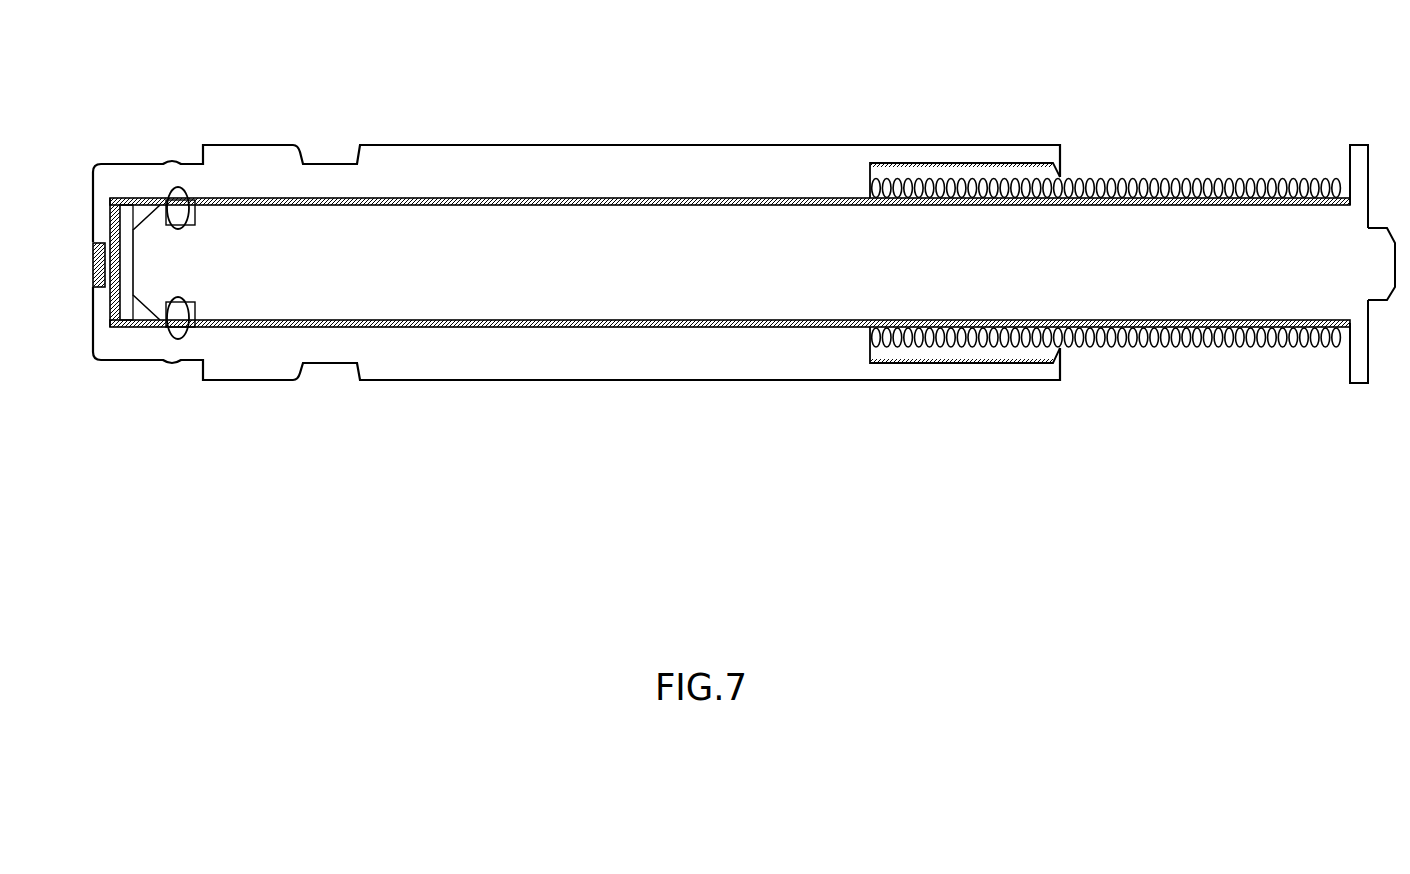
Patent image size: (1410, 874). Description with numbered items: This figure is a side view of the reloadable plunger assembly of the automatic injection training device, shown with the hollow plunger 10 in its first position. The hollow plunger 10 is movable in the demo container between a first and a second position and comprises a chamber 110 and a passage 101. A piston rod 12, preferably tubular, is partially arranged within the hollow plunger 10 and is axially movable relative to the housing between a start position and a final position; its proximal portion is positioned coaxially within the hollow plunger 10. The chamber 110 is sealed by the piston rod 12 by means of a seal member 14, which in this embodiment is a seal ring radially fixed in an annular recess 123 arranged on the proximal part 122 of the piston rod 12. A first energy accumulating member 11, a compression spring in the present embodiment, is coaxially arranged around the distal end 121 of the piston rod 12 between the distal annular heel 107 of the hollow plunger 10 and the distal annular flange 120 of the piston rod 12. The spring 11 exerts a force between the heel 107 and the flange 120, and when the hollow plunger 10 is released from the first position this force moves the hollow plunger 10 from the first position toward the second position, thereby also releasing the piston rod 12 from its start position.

The hollow plunger 10 is at (120, 343).
The passage 101 is at (101, 262).
The chamber 110 is at (128, 303).
The piston rod 12 is at (398, 253).
The proximal part of the piston rod 122 is at (153, 273).
The seal member 14 is at (176, 208).
The annular recess 123 is at (190, 312).
The distal annular heel 107 is at (870, 347).
The first energy accumulating member 11 is at (930, 337).
The distal annular flange 120 is at (1365, 358).
The distal end of the piston rod 121 is at (1380, 260).